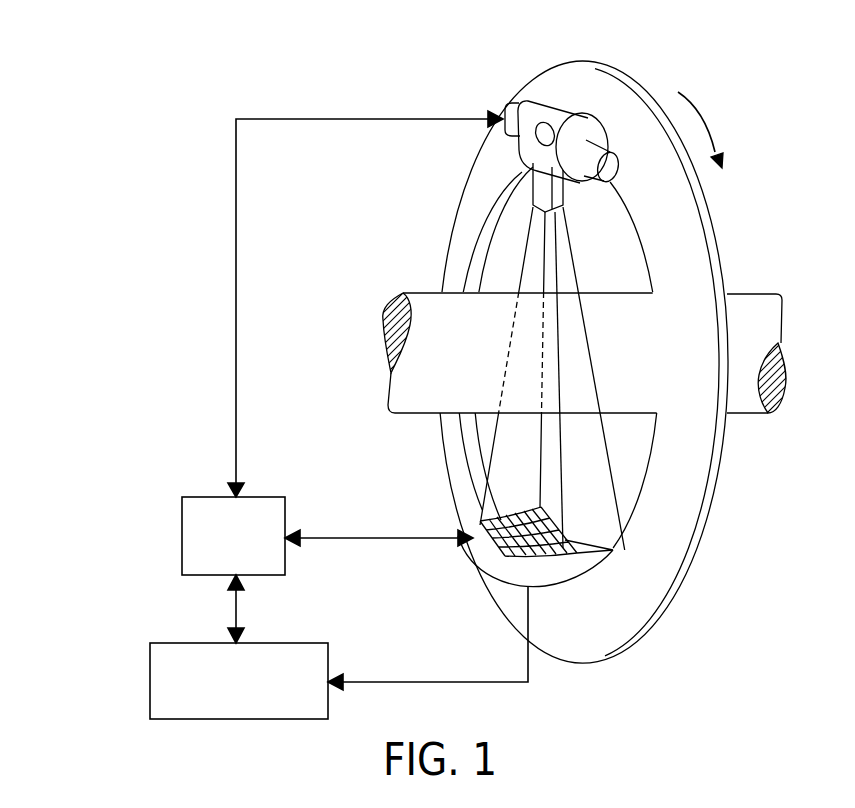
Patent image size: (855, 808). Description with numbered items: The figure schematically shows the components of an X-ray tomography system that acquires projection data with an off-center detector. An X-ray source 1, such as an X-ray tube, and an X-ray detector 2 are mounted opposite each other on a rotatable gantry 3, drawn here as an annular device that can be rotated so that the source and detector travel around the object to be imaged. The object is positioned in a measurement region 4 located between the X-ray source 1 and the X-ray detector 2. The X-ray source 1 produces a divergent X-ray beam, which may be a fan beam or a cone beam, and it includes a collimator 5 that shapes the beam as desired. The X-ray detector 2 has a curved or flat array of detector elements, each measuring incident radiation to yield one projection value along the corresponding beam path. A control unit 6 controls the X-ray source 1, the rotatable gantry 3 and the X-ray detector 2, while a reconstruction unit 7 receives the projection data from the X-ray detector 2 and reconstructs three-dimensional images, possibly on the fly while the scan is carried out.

The X-ray source 1 is at (563, 124).
The X-ray detector 2 is at (566, 572).
The rotatable gantry 3 is at (642, 540).
The measurement region 4 is at (391, 373).
The collimator 5 is at (561, 196).
The control unit 6 is at (182, 541).
The reconstruction unit 7 is at (150, 688).